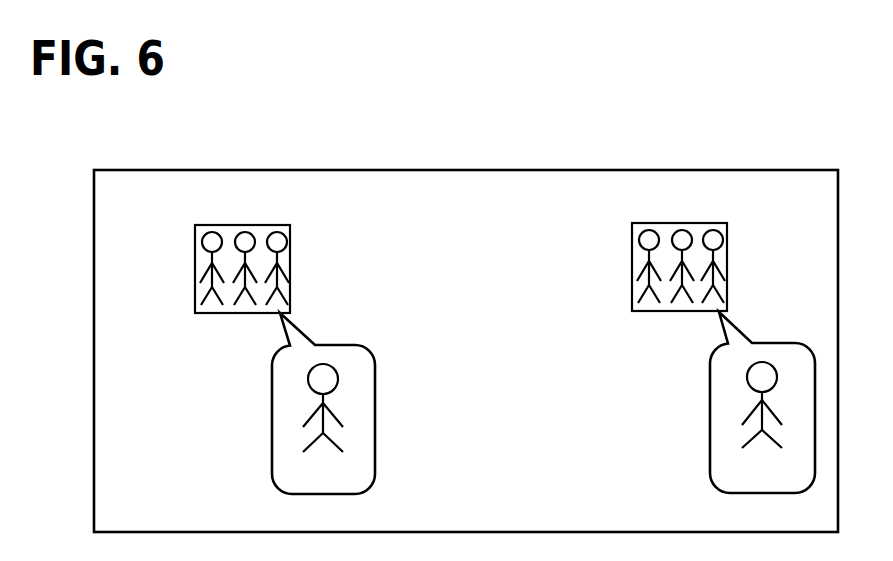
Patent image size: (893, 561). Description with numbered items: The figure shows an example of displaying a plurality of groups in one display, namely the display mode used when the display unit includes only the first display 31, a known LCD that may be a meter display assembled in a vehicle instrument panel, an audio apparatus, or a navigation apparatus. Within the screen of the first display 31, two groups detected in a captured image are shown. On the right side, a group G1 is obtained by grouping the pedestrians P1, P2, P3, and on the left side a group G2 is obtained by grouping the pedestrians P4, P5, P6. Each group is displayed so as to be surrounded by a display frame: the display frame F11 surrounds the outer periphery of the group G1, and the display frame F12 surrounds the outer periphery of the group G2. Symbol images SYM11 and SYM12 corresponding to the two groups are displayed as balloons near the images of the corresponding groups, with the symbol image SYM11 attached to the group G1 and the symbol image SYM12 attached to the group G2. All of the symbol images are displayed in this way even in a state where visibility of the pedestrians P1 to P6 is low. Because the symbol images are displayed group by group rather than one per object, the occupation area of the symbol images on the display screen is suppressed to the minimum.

The first display 31 is at (467, 168).
The group G1 is at (610, 268).
The group G2 is at (188, 268).
The display frame F11 is at (632, 283).
The display frame F12 is at (290, 265).
The pedestrian P1 is at (643, 235).
The pedestrian P2 is at (685, 233).
The pedestrian P3 is at (716, 235).
The pedestrian P4 is at (205, 237).
The pedestrian P5 is at (248, 235).
The pedestrian P6 is at (280, 237).
The symbol image SYM11 is at (710, 411).
The symbol image SYM12 is at (272, 413).